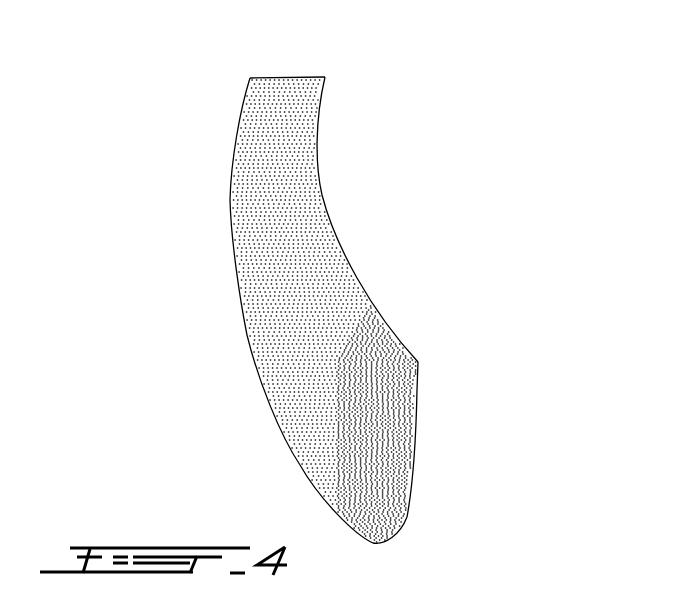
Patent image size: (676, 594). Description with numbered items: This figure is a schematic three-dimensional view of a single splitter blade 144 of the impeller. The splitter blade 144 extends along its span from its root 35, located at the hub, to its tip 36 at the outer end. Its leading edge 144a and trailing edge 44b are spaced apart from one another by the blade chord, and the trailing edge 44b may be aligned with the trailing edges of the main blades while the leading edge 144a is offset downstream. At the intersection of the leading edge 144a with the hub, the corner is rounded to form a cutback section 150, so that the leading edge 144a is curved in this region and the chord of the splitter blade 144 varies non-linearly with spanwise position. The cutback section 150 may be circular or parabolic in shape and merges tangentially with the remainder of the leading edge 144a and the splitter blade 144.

The splitter blade 144 is at (357, 240).
The leading edge of the splitter blade 144a is at (418, 415).
The cutback section 150 is at (403, 537).
The trailing edge of the splitter blade 44b is at (290, 77).
The tip 36 is at (315, 123).
The root 35 is at (243, 322).